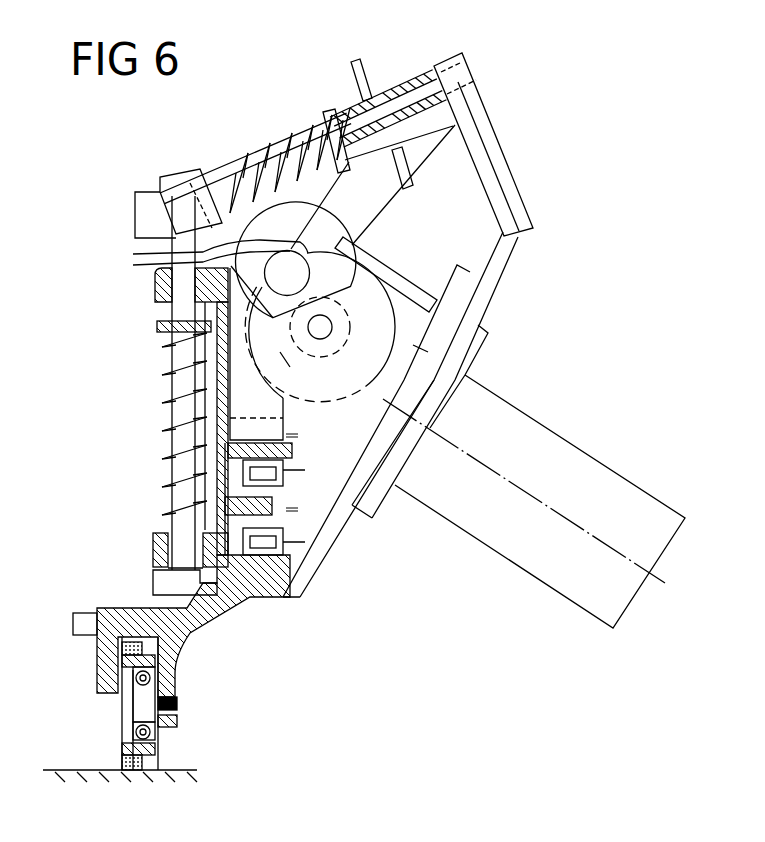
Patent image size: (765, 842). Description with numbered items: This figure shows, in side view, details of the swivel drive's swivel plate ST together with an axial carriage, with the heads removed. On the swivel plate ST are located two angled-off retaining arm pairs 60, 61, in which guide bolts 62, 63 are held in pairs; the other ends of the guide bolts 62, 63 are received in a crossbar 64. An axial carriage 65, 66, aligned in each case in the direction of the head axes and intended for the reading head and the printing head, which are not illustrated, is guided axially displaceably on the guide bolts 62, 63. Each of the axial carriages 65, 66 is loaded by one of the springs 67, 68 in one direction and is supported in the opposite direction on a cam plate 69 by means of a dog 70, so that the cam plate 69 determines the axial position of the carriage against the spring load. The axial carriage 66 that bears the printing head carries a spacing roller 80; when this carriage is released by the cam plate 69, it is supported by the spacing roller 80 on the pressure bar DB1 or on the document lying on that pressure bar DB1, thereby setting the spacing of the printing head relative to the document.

The retaining arm pair 60 is at (155, 580).
The retaining arm pair 61 is at (468, 104).
The guide bolt 62 is at (183, 460).
The guide bolt 63 is at (261, 160).
The crossbar 64 is at (140, 221).
The axial carriage 65 is at (348, 99).
The axial carriage 66 is at (155, 290).
The spring 67 is at (227, 163).
The spring 68 is at (168, 402).
The cam plate 69 is at (280, 346).
The dog 70 is at (173, 257).
The spacing roller 80 is at (127, 720).
The swivel plate ST is at (312, 555).
The pressure bar DB1 is at (177, 772).